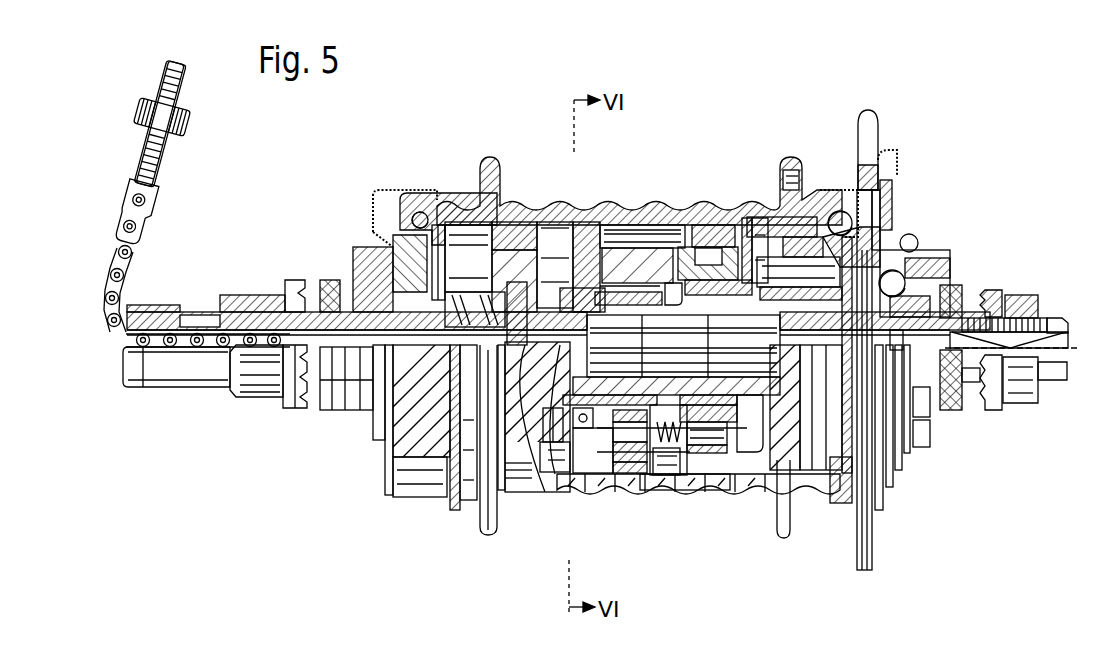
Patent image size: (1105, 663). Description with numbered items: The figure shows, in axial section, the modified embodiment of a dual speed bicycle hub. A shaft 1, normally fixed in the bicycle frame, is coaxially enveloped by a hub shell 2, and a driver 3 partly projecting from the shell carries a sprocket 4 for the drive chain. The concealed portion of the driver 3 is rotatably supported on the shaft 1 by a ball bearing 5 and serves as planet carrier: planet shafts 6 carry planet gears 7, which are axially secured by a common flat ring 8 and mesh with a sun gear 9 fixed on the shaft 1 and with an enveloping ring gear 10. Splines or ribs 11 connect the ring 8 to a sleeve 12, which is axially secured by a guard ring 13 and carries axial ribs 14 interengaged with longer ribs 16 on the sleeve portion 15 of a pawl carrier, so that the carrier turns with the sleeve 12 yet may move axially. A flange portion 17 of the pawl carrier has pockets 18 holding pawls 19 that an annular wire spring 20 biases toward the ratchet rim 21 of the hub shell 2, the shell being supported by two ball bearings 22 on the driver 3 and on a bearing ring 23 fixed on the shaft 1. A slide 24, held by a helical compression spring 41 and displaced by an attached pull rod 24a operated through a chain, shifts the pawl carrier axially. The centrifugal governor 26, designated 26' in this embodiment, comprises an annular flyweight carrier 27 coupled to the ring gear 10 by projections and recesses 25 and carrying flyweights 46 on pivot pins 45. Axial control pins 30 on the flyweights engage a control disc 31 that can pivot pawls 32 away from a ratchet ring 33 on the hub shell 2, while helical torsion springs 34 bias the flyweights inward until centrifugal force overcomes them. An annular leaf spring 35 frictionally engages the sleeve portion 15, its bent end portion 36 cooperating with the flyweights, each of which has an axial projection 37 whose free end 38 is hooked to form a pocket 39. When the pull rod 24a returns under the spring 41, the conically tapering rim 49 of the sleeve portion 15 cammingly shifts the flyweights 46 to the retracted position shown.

The shaft 1 is at (948, 365).
The hub shell 2 is at (420, 198).
The driver 3 is at (892, 232).
The sprocket 4 is at (878, 165).
The ball bearing 5 is at (935, 268).
The planet shaft 6 is at (913, 236).
The planet gear 7 is at (830, 212).
The flat ring 8 is at (776, 222).
The sun gear 9 is at (903, 455).
The ring gear 10 is at (800, 215).
The splines or ribs 11 is at (872, 500).
The sleeve 12 is at (745, 490).
The guard ring 13 is at (482, 480).
The axial ribs 14 is at (632, 246).
The sleeve portion of pawl carrier 15 is at (410, 470).
The longer ribs 16 is at (420, 497).
The flange portion of pawl carrier 17 is at (360, 410).
The pockets 18 is at (548, 222).
The pawls 19 is at (480, 220).
The annular wire spring 20 is at (517, 222).
The ratchet rim 21 is at (440, 222).
The ball bearings 22 is at (395, 212).
The bearing ring 23 is at (392, 250).
The slide 24 is at (385, 442).
The pull rod 24a is at (300, 402).
The projections and recesses 25 is at (748, 216).
The centrifugal governor 26 is at (639, 325).
The centrifugal governor 26' is at (685, 520).
The flyweight carrier 27 is at (800, 490).
The axial control pins 30 is at (665, 478).
The control disc 31 is at (692, 246).
The pawls 32 is at (665, 262).
The ratchet ring 33 is at (722, 225).
The helical torsion springs 34 is at (712, 478).
The annular leaf spring 35 is at (580, 222).
The end portion of leaf spring 36 is at (618, 473).
The axial projection 37 is at (582, 473).
The free end of projection 38 is at (530, 470).
The pocket 39 is at (556, 473).
The helical compression spring 41 is at (378, 280).
The pivot pins 45 is at (660, 476).
The flyweights 46 is at (606, 222).
The conically tapering rim 49 is at (660, 246).